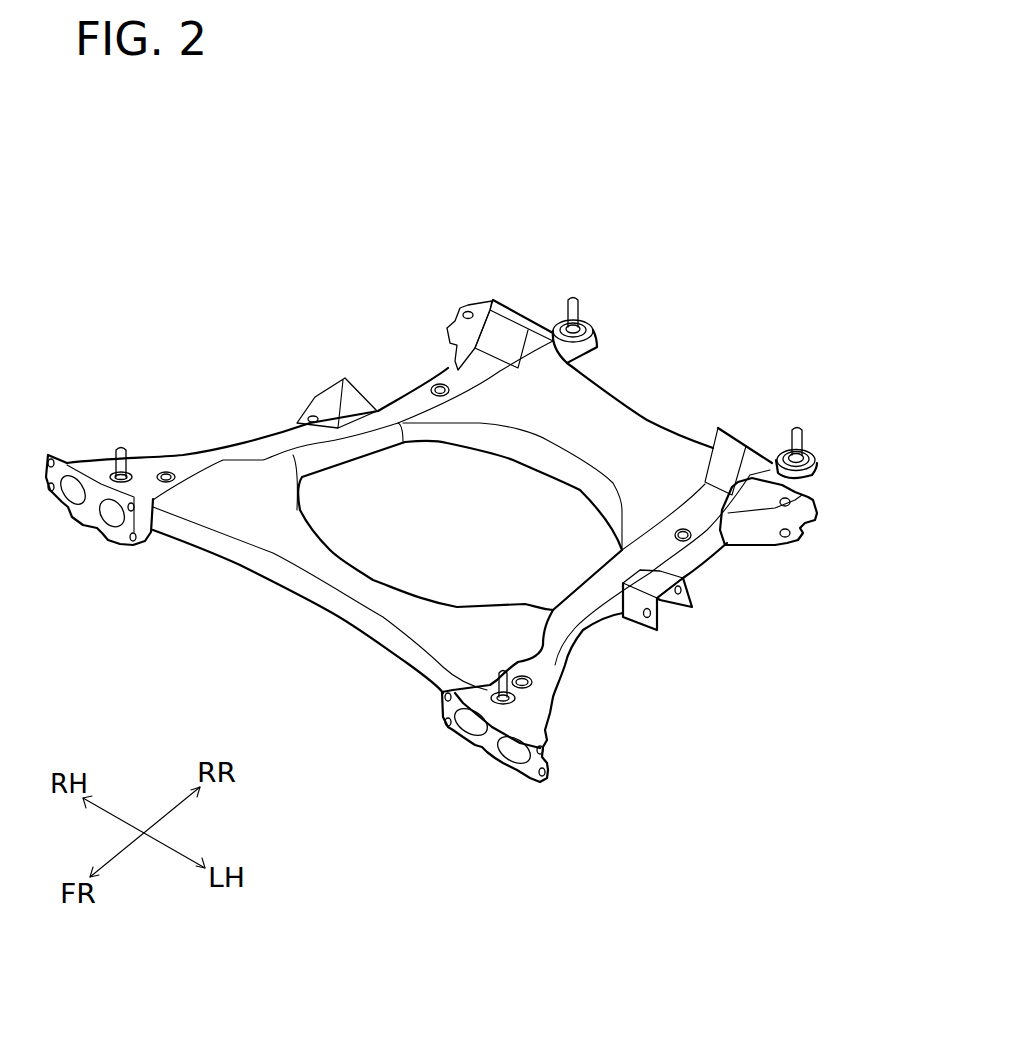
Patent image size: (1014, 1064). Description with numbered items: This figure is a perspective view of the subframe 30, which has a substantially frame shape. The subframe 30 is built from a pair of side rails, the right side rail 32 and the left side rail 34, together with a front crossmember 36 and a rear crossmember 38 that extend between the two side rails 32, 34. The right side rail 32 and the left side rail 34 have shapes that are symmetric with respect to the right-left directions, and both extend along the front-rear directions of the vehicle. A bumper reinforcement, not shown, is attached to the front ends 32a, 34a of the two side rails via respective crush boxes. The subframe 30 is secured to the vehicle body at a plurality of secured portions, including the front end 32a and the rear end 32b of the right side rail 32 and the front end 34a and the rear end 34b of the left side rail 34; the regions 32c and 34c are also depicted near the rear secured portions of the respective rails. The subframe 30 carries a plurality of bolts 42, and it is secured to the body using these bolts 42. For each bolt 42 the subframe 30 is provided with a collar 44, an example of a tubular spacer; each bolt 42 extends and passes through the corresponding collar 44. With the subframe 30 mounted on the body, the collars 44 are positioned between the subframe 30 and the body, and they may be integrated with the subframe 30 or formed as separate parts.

The subframe 30 is at (700, 254).
The right side rail 32 is at (290, 452).
The front end of the right side rail 32a is at (80, 520).
The rear end of the right side rail 32b is at (550, 323).
The mount portion of front cross member 32c is at (597, 337).
The left side rail 34 is at (580, 603).
The front end of the left side rail 34a is at (493, 737).
The rear end of the left side rail 34b is at (810, 480).
The mount portion of rear cross member 34c is at (820, 465).
The front crossmember 36 is at (410, 615).
The rear crossmember 38 is at (646, 432).
The bolt 42 is at (113, 453).
The collar 44 is at (583, 320).